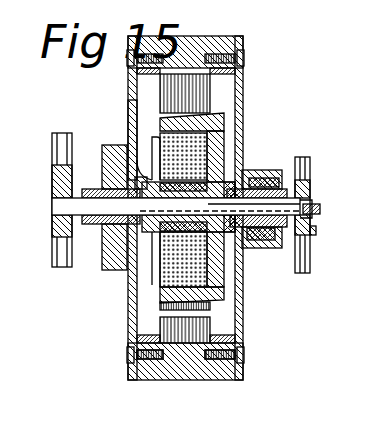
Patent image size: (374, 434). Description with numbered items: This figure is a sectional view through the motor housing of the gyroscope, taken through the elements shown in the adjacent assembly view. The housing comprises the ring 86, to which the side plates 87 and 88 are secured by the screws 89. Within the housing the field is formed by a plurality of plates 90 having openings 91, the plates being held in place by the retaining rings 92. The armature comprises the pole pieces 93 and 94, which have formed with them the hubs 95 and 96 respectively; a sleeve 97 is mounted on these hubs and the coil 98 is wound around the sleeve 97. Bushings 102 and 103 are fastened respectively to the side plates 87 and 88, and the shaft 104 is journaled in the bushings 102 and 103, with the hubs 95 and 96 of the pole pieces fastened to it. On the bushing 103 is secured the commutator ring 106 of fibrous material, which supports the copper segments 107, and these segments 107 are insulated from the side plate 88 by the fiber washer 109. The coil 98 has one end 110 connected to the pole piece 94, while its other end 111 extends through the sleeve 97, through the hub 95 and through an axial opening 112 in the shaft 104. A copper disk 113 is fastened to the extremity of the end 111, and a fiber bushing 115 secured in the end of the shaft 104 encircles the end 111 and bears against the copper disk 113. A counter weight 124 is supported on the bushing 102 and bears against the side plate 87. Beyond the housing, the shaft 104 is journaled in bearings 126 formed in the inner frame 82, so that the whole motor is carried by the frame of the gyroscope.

The inner frame 82 is at (58, 148).
The ring 86 is at (180, 380).
The side plate 87 is at (128, 325).
The side plate 88 is at (243, 323).
The screws 89 is at (128, 360).
The plates 90 is at (160, 305).
The openings 91 is at (210, 314).
The retaining rings 92 is at (128, 340).
The pole piece 93 is at (220, 114).
The pole piece 94 is at (145, 177).
The hub 95 is at (226, 240).
The hub 96 is at (153, 243).
The sleeve 97 is at (232, 178).
The coil 98 is at (224, 137).
The bushing 102 is at (92, 226).
The bushing 103 is at (298, 235).
The shaft 104 is at (52, 210).
The commutator ring 106 is at (298, 180).
The copper segments 107 is at (282, 248).
The fiber washer 109 is at (270, 167).
The end 110 is at (132, 147).
The end 111 is at (314, 231).
The axial opening 112 is at (310, 193).
The copper disk 113 is at (322, 205).
The fiber bushing 115 is at (315, 212).
The counter weight 124 is at (112, 266).
The bearings 126 is at (58, 176).